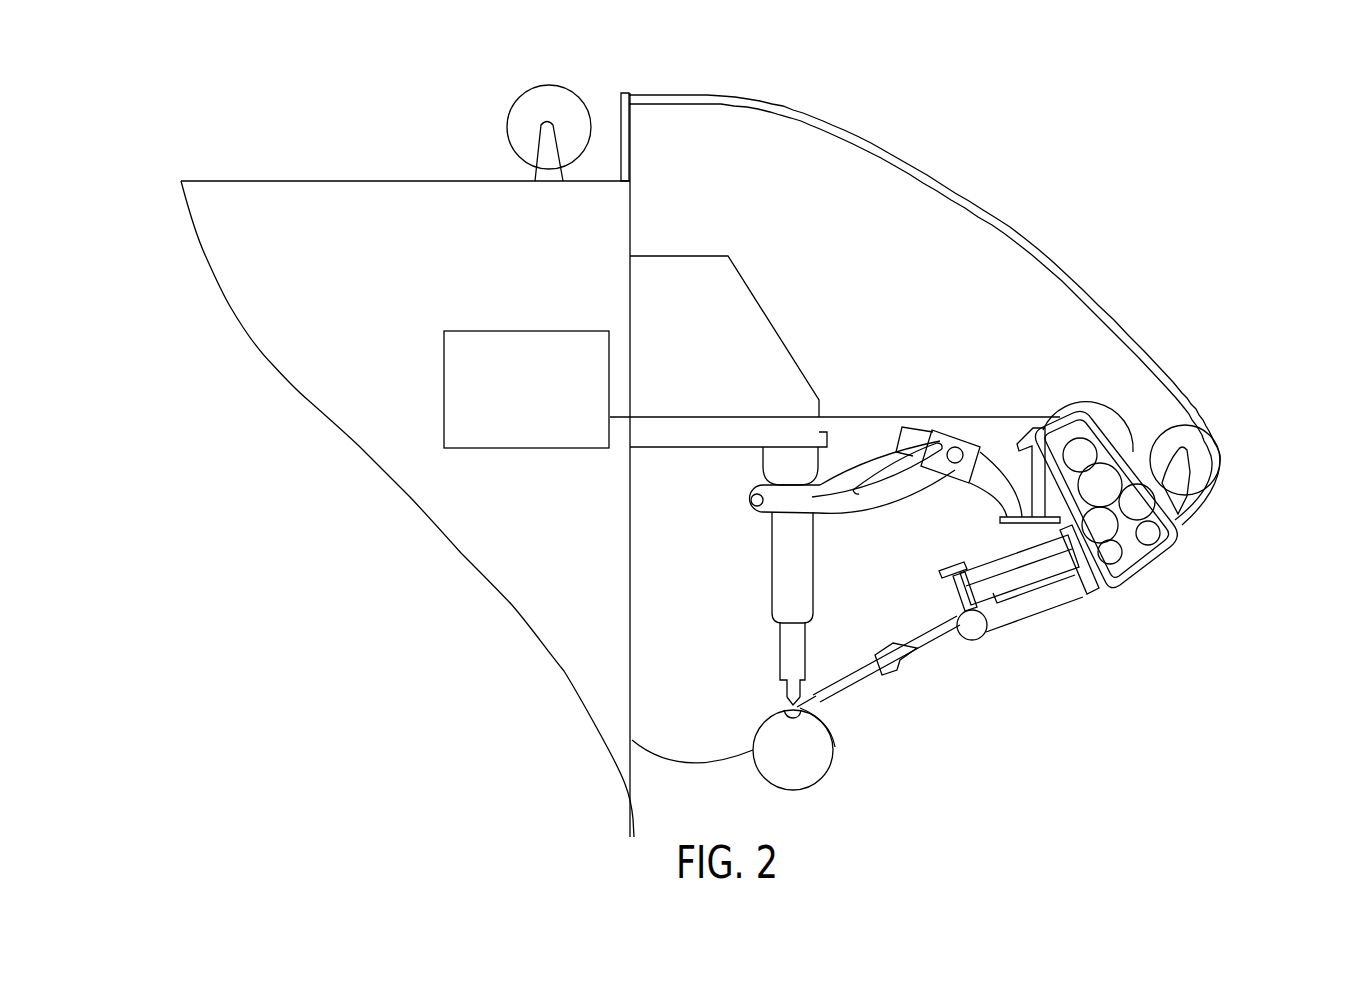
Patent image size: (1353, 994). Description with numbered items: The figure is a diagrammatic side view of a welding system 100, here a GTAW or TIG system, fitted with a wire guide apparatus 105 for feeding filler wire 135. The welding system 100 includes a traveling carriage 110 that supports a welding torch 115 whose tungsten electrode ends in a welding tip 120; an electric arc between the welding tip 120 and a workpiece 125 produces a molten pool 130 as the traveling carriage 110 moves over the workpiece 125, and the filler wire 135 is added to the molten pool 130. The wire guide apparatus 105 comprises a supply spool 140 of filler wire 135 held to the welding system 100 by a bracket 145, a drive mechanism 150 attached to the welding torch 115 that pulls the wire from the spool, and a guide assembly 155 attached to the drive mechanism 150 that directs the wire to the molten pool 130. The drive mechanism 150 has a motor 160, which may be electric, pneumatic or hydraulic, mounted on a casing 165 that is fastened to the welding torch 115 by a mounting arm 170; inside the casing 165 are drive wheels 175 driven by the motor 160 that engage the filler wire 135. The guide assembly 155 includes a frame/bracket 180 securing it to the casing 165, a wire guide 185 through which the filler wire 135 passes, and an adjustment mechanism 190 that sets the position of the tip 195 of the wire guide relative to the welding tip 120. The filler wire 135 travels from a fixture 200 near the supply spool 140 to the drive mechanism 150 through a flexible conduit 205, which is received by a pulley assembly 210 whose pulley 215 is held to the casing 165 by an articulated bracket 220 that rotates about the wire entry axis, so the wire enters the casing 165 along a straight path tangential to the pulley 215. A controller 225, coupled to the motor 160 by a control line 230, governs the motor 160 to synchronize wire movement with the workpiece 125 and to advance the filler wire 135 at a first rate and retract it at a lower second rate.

The welding system 100 is at (571, 226).
The wire guide apparatus 105 is at (924, 278).
The traveling carriage 110 is at (675, 315).
The welding torch 115 is at (770, 555).
The welding tip 120 is at (792, 700).
The workpiece 125 is at (780, 763).
The molten pool 130 is at (835, 747).
The filler wire 135 is at (800, 703).
The supply spool 140 is at (537, 121).
The bracket 145 is at (530, 178).
The drive mechanism 150 is at (1175, 580).
The guide assembly 155 is at (993, 657).
The motor 160 is at (1103, 410).
The casing 165 is at (1178, 537).
The mounting arm 170 is at (945, 490).
The drive wheels 175 is at (1120, 583).
The frame/bracket 180 is at (1067, 603).
The wire guide 185 is at (925, 622).
The adjustment mechanism 190 is at (948, 592).
The tip 195 is at (813, 703).
The fixture 200 is at (632, 135).
The conduit 205 is at (1023, 232).
The pulley assembly 210 is at (1228, 495).
The pulley 215 is at (1190, 427).
The articulated bracket 220 is at (1190, 467).
The controller 225 is at (514, 417).
The control line 230 is at (718, 415).